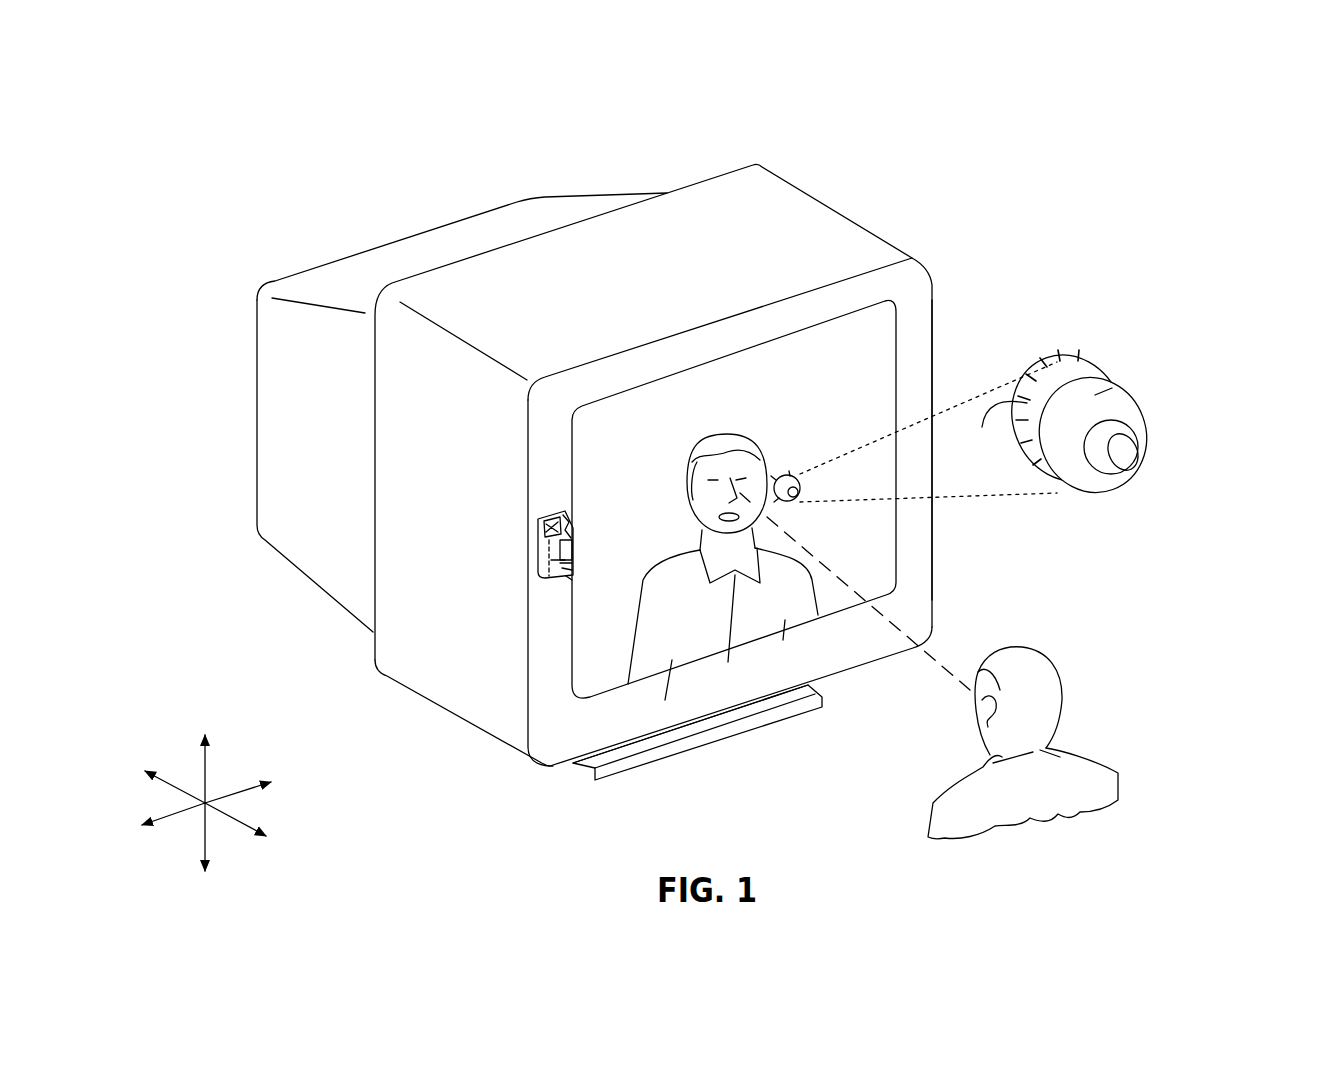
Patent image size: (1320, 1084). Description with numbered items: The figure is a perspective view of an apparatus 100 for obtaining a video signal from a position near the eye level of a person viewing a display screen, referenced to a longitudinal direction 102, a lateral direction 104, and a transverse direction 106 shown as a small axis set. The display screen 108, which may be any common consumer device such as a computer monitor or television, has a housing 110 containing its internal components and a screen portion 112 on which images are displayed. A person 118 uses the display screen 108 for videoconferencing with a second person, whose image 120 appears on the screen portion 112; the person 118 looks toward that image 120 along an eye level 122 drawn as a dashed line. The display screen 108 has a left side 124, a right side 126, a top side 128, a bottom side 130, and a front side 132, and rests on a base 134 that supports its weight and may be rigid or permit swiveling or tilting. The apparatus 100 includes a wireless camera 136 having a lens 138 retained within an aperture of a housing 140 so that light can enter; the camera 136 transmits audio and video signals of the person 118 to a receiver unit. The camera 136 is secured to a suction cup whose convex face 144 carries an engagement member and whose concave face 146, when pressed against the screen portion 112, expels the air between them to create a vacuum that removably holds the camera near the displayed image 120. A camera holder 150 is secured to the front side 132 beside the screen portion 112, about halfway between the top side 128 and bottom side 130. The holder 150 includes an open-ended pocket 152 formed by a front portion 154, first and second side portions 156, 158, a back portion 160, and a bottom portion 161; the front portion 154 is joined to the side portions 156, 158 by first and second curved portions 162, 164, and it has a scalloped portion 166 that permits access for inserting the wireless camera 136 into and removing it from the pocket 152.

The apparatus 100 is at (1172, 134).
The longitudinal direction 102 is at (247, 818).
The lateral direction 104 is at (232, 768).
The transverse direction 106 is at (232, 738).
The display screen 108 is at (693, 494).
The housing 110 is at (825, 217).
The screen portion 112 is at (880, 352).
The person 118 is at (1093, 775).
The image 120 is at (693, 502).
The eye level 122 is at (942, 670).
The left side 124 is at (462, 697).
The right side 126 is at (935, 577).
The top side 128 is at (658, 299).
The bottom side 130 is at (552, 777).
The front side 132 is at (665, 713).
The base 134 is at (783, 712).
The camera 136 is at (1083, 433).
The lens 138 is at (1125, 450).
The housing 140 is at (1053, 462).
The convex face 144 is at (1023, 447).
The concave face 146 is at (995, 429).
The camera holder 150 is at (547, 560).
The open-ended pocket 152 is at (553, 517).
The front portion 154 is at (567, 573).
The first side portion 156 is at (540, 563).
The second side portion 158 is at (573, 545).
The back portion 160 is at (540, 527).
The bottom portion 161 is at (572, 588).
The first curved portion 162 is at (557, 580).
The second curved portion 164 is at (570, 565).
The scalloped portion 166 is at (565, 517).